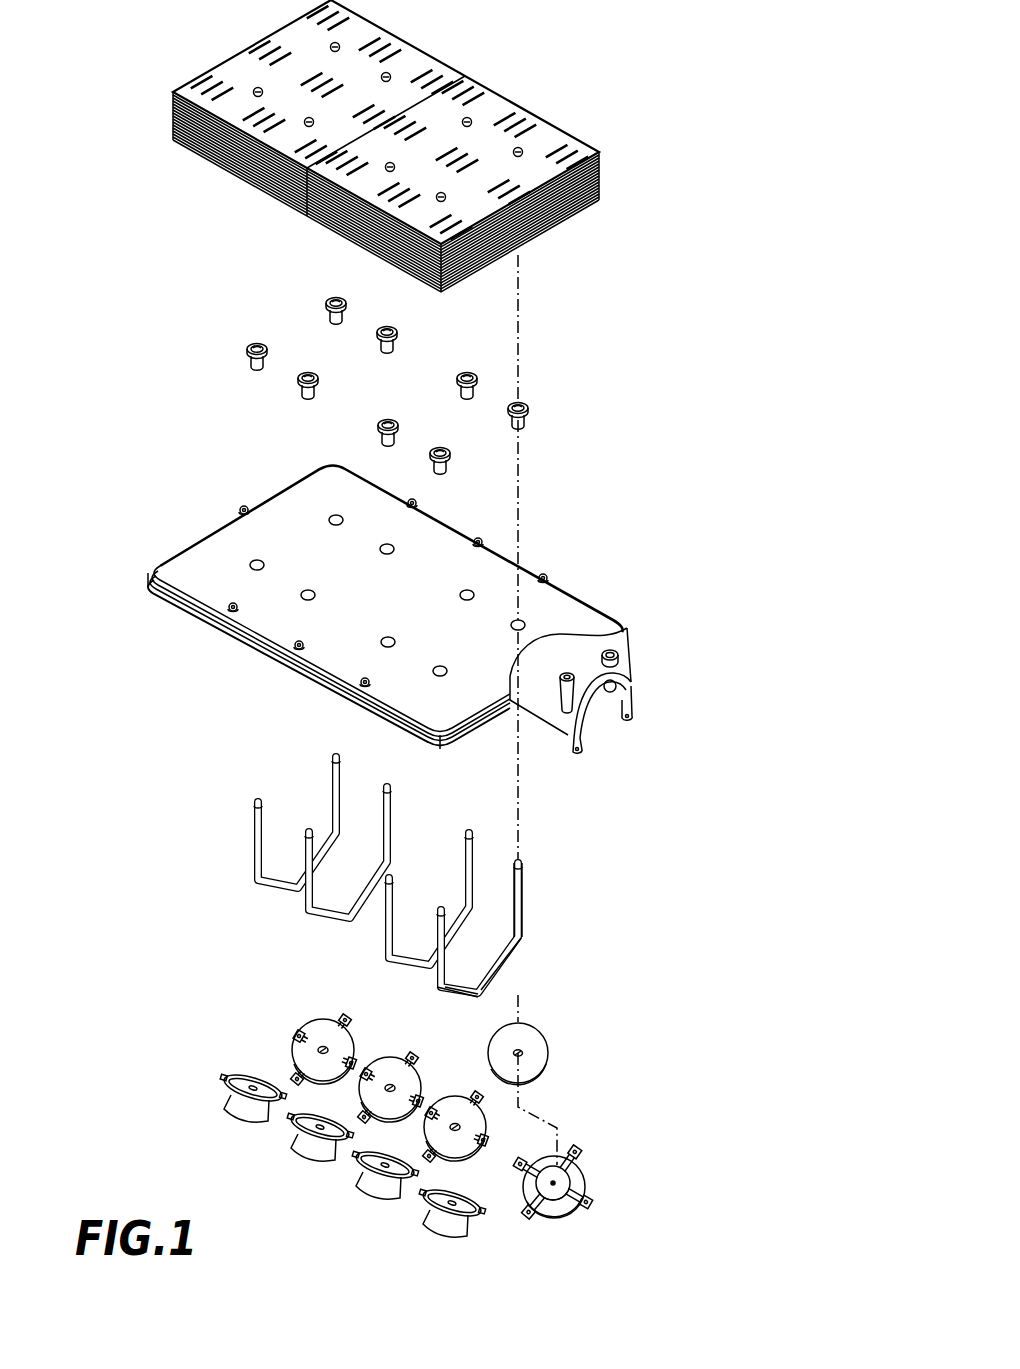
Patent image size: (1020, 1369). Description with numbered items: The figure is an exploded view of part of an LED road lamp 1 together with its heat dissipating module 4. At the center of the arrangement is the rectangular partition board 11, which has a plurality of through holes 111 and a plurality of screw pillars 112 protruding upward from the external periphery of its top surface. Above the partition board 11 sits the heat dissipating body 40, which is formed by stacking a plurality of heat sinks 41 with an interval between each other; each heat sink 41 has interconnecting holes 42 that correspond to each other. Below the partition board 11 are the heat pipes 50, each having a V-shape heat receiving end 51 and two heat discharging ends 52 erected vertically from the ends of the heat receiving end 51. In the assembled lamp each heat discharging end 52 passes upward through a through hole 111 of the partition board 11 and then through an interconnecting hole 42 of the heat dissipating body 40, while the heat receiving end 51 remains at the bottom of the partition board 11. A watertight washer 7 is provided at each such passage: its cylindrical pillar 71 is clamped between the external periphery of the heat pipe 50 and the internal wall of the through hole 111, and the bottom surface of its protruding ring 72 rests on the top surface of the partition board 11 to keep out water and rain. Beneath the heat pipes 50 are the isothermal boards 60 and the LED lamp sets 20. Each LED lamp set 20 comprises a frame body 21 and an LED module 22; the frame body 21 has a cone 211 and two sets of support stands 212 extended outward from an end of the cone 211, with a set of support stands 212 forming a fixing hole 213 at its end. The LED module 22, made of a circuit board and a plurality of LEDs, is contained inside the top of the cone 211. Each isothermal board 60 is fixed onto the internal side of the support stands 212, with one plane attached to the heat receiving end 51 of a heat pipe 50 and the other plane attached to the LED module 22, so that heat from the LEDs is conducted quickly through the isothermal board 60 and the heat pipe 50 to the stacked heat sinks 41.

The LED road lamp 1 is at (731, 542).
The partition board 11 is at (638, 649).
The through hole 111 is at (527, 624).
The screw pillar 112 is at (547, 576).
The heat dissipating module 4 is at (691, 128).
The heat dissipating body 40 is at (449, 57).
The heat sink 41 is at (545, 135).
The interconnecting hole 42 is at (471, 118).
The watertight washer 7 is at (570, 396).
The cylindrical pillar 71 is at (572, 434).
The protruding ring 72 is at (561, 360).
The heat pipe 50 is at (562, 889).
The heat receiving end 51 is at (510, 968).
The heat discharging end 52 is at (522, 906).
The isothermal board 60 is at (539, 1047).
The LED lamp set 20 is at (659, 1230).
The frame body 21 is at (606, 1188).
The cone 211 is at (567, 1212).
The support stand 212 is at (604, 1241).
The fixing hole 213 is at (616, 1130).
The LED module 22 is at (548, 1192).